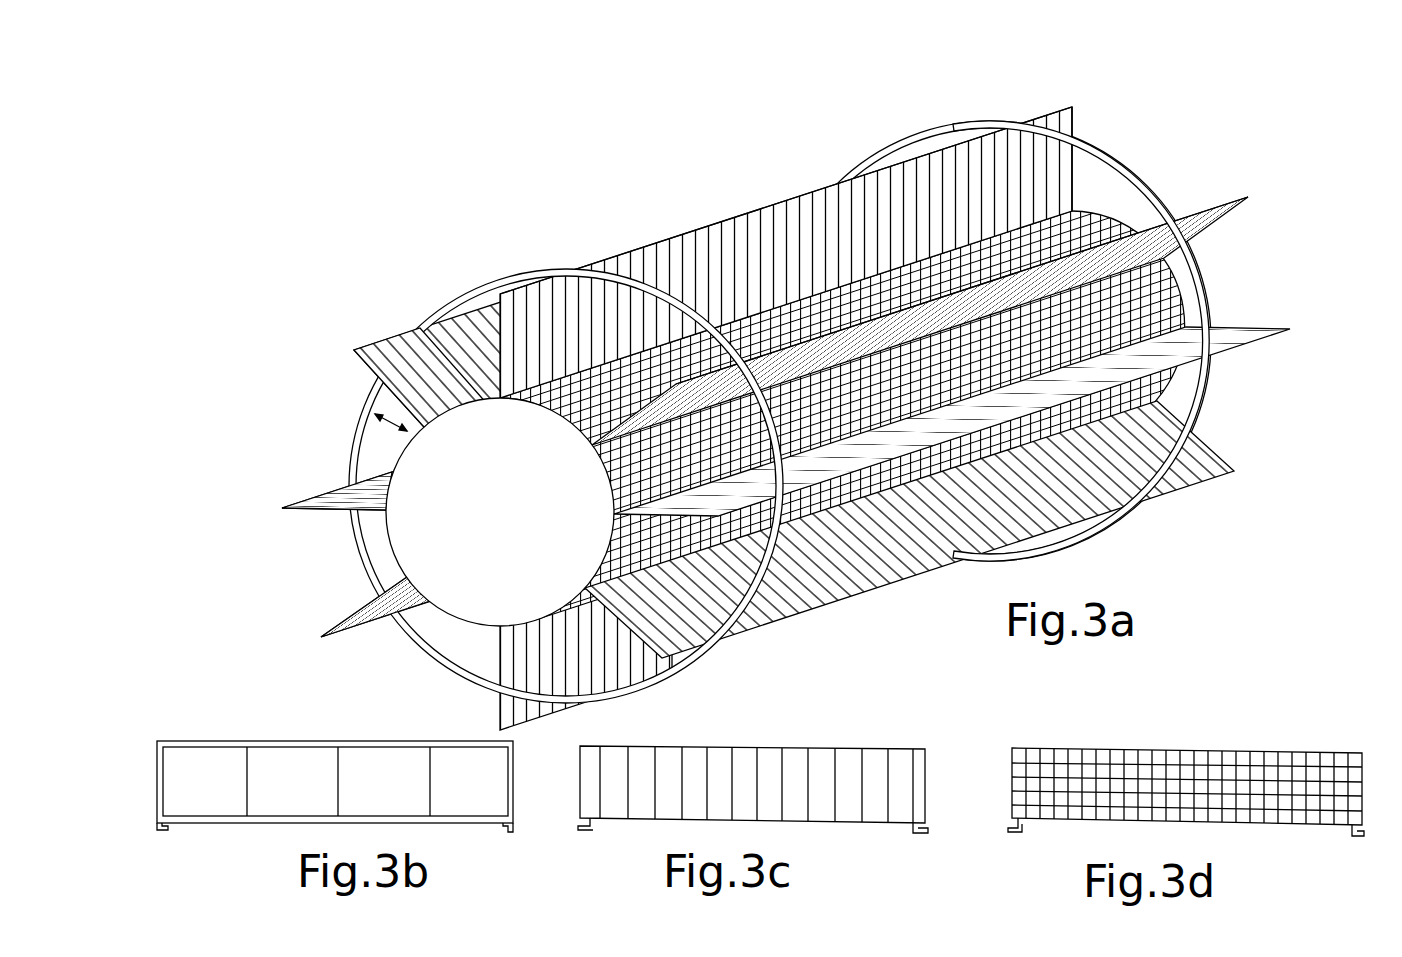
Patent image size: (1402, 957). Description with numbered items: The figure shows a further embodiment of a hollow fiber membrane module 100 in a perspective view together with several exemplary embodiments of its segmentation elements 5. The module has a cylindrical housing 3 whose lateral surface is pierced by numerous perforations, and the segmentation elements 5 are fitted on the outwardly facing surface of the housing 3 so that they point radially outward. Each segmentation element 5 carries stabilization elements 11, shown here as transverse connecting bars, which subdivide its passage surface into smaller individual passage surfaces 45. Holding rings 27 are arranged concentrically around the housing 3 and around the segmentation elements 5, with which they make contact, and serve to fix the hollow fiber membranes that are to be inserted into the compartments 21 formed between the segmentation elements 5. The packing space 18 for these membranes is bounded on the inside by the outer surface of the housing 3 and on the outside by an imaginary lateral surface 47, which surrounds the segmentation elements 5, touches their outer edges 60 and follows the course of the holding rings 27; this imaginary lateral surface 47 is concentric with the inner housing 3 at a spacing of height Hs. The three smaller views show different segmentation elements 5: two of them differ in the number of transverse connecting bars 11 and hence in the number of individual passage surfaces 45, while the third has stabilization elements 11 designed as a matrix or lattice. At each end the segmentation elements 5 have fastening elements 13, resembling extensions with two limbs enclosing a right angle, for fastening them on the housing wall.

In FIG. 3A, the hollow fiber membrane module 100 is at (796, 388).
In FIG. 3A, the segmentation element 5 is at (771, 206).
In FIG. 3B, the segmentation element 5 is at (355, 777).
In FIG. 3C, the segmentation element 5 is at (753, 770).
In FIG. 3D, the segmentation element 5 is at (1186, 767).
In FIG. 3A, the outer edge 60 is at (690, 232).
In FIG. 3A, the stabilization element 11 is at (1073, 100).
In FIG. 3B, the stabilization element 11 is at (430, 783).
In FIG. 3C, the stabilization element 11 is at (837, 792).
In FIG. 3D, the stabilization element 11 is at (1270, 793).
In FIG. 3A, the holding ring 27 is at (537, 268).
In FIG. 3A, the packing space 18 is at (675, 295).
In FIG. 3A, the imaginary lateral surface 47 is at (1213, 377).
In FIG. 3A, the compartment 21 is at (1173, 390).
In FIG. 3A, the cylindrical housing 3 is at (650, 513).
In FIG. 3B, the individual passage surface 45 is at (193, 783).
In FIG. 3B, the fastening element 13 is at (503, 833).